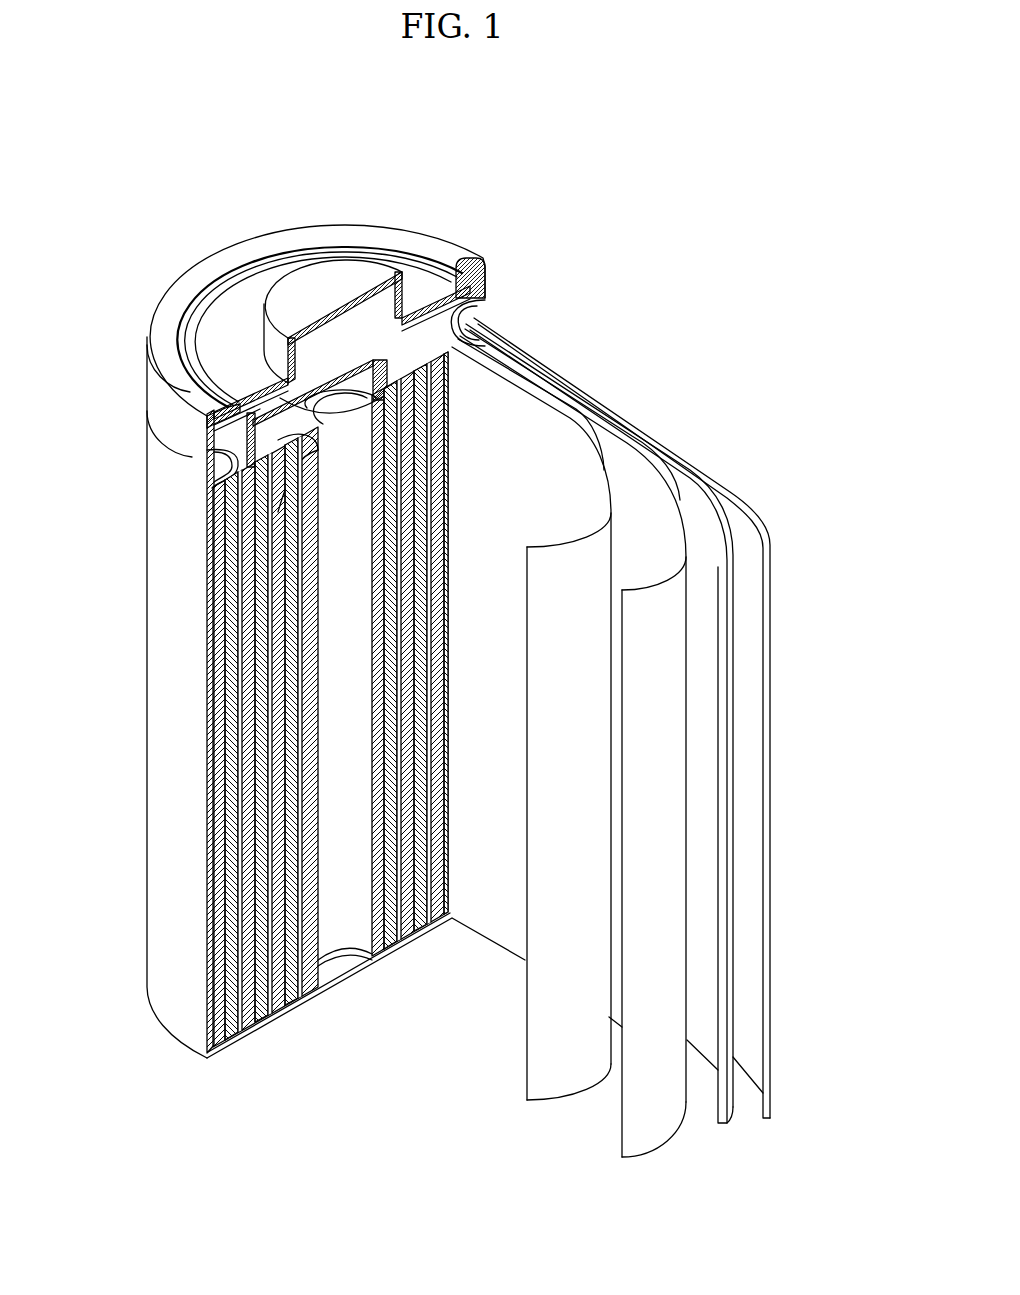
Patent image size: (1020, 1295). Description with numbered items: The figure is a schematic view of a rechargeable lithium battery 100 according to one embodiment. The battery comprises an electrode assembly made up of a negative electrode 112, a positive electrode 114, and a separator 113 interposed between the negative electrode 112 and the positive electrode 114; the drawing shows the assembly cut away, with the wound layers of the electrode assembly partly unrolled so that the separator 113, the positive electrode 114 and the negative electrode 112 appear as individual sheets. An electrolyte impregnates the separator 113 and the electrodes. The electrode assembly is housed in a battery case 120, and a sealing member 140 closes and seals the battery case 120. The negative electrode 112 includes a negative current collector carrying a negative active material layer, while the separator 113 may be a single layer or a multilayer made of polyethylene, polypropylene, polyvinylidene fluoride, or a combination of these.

The rechargeable lithium battery 100 is at (539, 231).
The negative electrode 112 is at (737, 502).
The separator 113 is at (551, 424).
The positive electrode 114 is at (620, 462).
The battery case 120 is at (147, 590).
The sealing member 140 is at (320, 282).